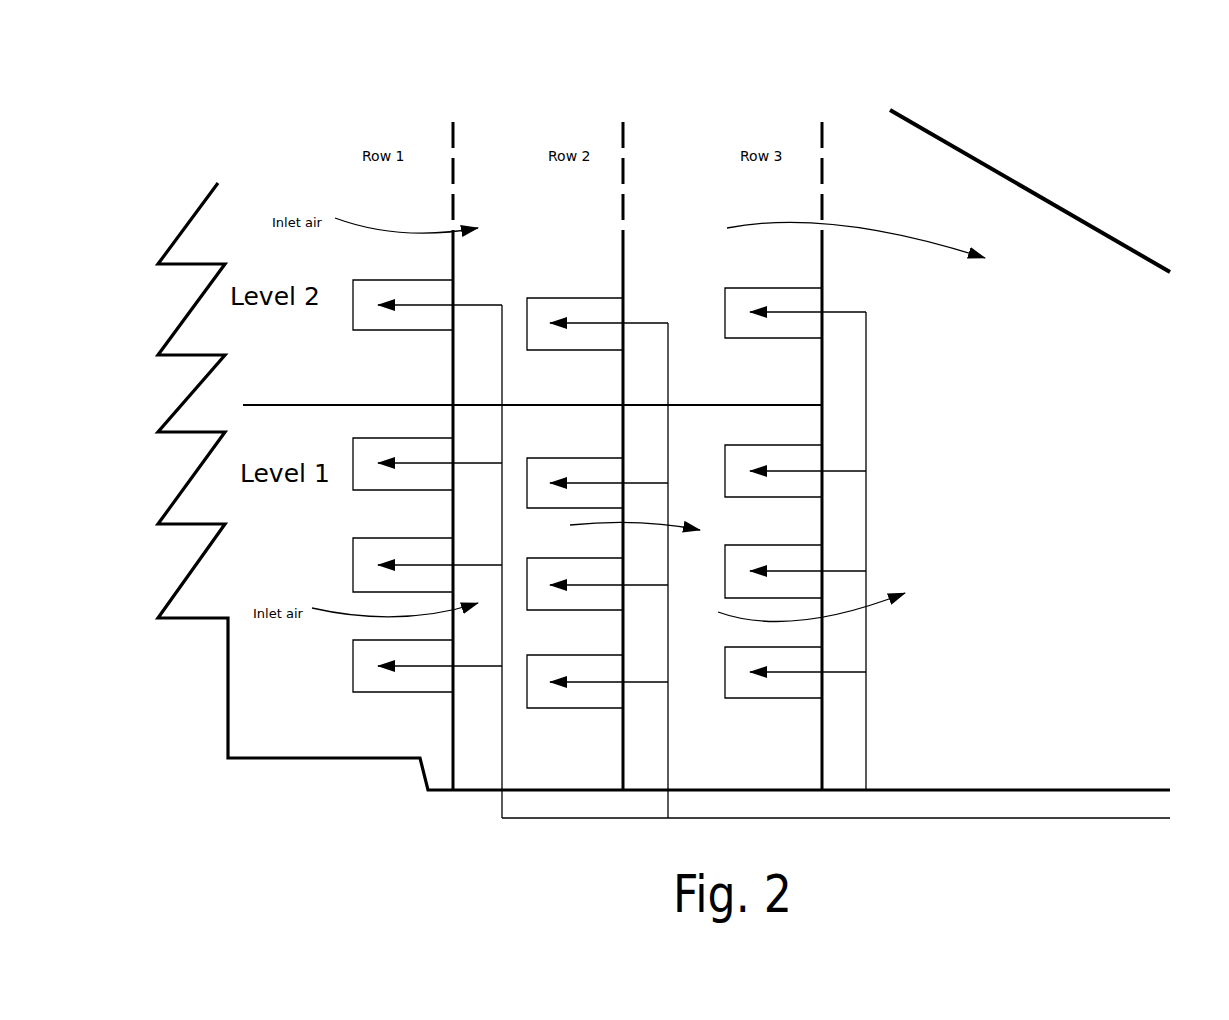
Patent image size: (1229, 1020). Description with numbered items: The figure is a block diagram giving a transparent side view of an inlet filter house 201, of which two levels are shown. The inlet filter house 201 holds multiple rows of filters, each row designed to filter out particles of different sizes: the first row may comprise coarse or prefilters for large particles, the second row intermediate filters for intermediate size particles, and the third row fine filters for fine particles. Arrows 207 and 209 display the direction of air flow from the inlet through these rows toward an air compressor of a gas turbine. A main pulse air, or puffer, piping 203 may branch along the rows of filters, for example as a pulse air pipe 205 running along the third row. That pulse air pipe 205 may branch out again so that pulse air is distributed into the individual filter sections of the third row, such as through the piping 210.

The inlet filter house 201 is at (122, 163).
The main pulse air piping 203 is at (945, 817).
The pulse air pipe 205 is at (866, 437).
The arrow 207 is at (873, 230).
The arrow 209 is at (882, 598).
The piping 210 is at (852, 672).